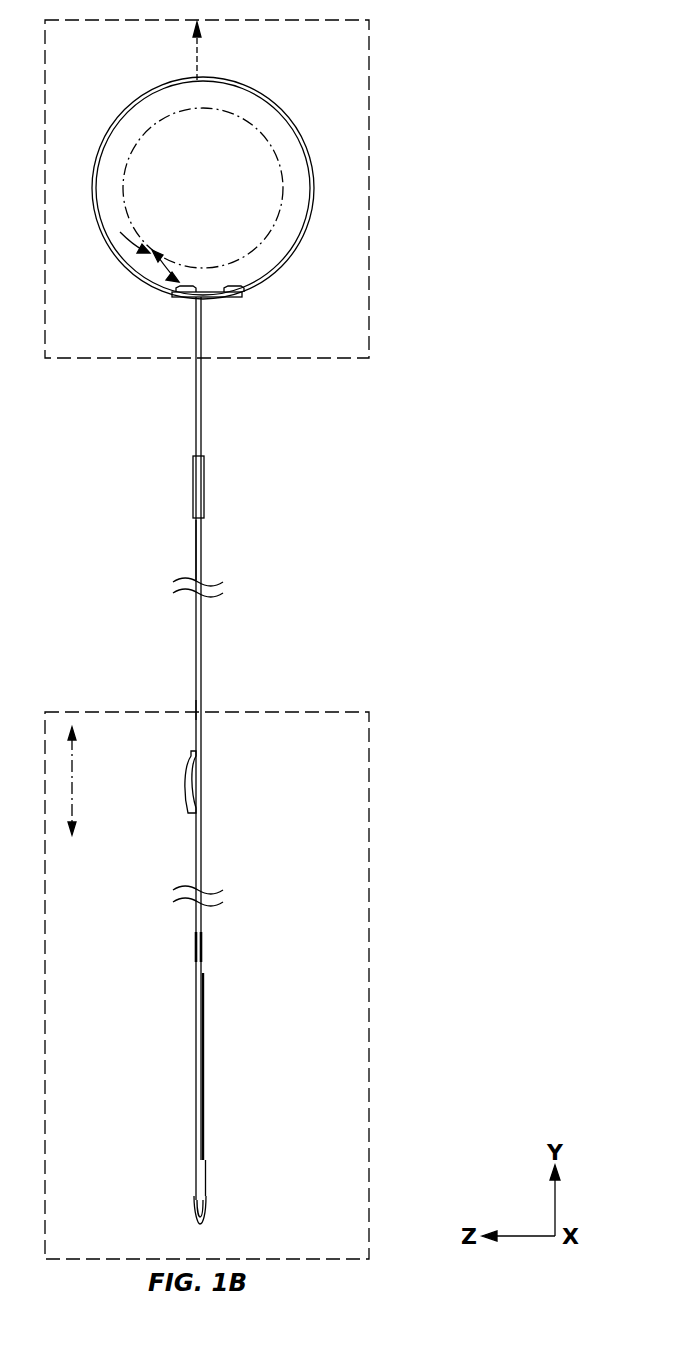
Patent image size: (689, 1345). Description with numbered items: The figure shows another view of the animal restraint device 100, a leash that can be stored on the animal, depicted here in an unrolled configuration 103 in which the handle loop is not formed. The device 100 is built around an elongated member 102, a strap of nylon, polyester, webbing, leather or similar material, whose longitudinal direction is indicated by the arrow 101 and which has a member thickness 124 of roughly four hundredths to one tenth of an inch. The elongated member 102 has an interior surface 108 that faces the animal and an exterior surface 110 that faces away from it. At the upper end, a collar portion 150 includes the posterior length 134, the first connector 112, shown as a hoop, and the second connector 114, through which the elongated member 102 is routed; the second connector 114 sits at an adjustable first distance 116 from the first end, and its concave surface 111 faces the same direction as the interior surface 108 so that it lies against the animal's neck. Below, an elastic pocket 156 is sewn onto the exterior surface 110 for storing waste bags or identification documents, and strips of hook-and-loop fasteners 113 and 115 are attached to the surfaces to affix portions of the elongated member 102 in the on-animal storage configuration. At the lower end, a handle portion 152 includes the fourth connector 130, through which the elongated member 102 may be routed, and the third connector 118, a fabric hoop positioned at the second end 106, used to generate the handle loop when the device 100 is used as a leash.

The animal restraint device 100 is at (433, 78).
The longitudinal direction 101 is at (197, 63).
The elongated member 102 is at (196, 436).
The unrolled configuration 103 is at (420, 490).
The second end 106 is at (194, 1222).
The interior surface 108 is at (185, 710).
The exterior surface 110 is at (212, 728).
The concave surface 111 is at (185, 297).
The first connector 112 is at (240, 298).
The strip of hook-and-loop fastener 113 is at (196, 556).
The second connector 114 is at (208, 290).
The strip of hook-and-loop fastener 115 is at (204, 1070).
The first distance 116 is at (285, 215).
The third connector 118 is at (206, 1210).
The member thickness 124 is at (170, 948).
The fourth connector 130 is at (197, 775).
The posterior length 134 is at (143, 280).
The collar portion 150 is at (363, 57).
The handle portion 152 is at (362, 1249).
The elastic pocket 156 is at (204, 485).